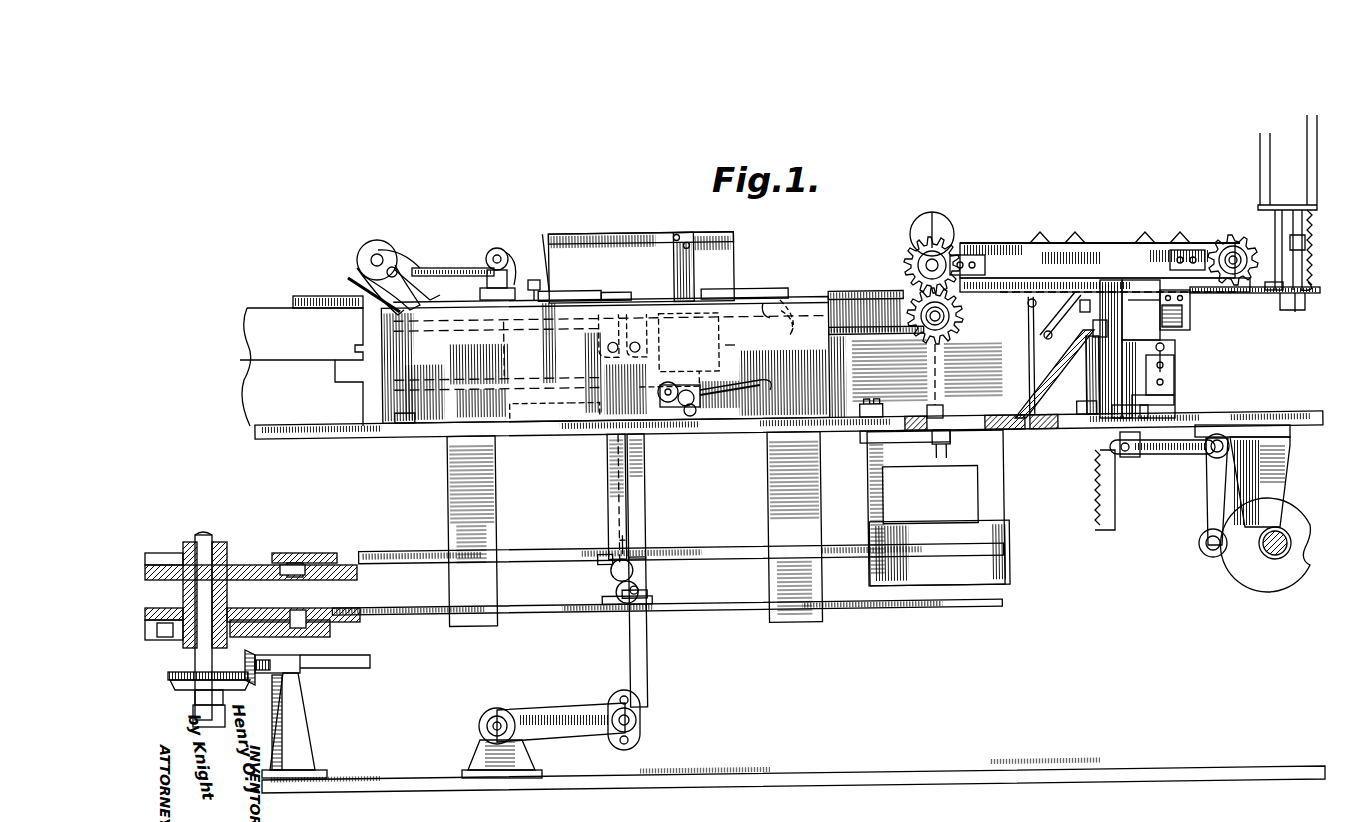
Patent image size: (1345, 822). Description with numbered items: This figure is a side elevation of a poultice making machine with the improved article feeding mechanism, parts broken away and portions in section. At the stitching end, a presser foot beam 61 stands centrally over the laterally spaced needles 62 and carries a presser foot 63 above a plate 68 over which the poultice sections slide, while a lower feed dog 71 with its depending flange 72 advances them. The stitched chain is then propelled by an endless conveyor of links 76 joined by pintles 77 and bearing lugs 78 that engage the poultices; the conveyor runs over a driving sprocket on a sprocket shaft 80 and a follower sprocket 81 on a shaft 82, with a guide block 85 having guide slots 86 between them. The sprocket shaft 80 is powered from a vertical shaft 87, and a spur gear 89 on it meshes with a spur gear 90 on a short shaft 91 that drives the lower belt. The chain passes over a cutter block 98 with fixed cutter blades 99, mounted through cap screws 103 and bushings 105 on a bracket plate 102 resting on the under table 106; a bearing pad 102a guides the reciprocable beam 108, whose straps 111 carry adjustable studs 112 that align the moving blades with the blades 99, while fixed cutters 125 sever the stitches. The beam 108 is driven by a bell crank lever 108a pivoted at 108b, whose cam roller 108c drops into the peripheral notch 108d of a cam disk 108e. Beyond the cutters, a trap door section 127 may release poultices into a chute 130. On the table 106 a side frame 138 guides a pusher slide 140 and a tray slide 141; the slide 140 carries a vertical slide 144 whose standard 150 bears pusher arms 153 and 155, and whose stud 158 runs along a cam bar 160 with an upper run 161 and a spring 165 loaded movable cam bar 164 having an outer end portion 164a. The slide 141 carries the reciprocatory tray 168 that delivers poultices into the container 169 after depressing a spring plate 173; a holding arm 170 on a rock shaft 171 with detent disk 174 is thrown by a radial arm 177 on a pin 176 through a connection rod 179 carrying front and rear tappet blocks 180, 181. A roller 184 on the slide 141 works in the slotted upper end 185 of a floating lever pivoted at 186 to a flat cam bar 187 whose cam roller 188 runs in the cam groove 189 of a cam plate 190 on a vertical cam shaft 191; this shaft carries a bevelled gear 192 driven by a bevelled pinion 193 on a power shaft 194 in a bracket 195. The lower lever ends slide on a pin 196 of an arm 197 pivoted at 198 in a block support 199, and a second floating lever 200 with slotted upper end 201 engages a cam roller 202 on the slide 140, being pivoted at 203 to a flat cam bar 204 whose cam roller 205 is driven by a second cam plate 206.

The presser foot beam 61 is at (1275, 222).
The needles 62 is at (1292, 262).
The presser foot 63 is at (1276, 294).
The plate 68 is at (1255, 293).
The lower feed dog 71 is at (1302, 298).
The depending flange 72 is at (1296, 305).
The links 76 is at (1100, 227).
The pintles 77 is at (1079, 227).
The lugs 78 is at (1145, 227).
The sprocket shaft 80 is at (912, 263).
The follower sprocket 81 is at (1236, 246).
The shaft 82 is at (534, 280).
The guide block 85 is at (1100, 260).
The guide slots 86 is at (985, 252).
The vertical shaft 87 is at (943, 397).
The spur gear 89 is at (912, 255).
The spur gear 90 is at (952, 330).
The short shaft 91 is at (933, 324).
The cutter block 98 is at (1190, 322).
The fixed cutter blades 99 is at (1186, 300).
The bracket plate 102 is at (1120, 368).
The bearing pad 102a is at (1150, 403).
The cap screws 103 is at (1095, 340).
The bushings 105 is at (1165, 363).
The supporting plate or table 106 is at (405, 432).
The reciprocable beam 108 is at (1142, 390).
The bell crank lever 108a is at (1168, 452).
The pivot 108b is at (1214, 460).
The cam roller 108c is at (1203, 550).
The peripheral notch 108d is at (1290, 582).
The cam disk 108e is at (1245, 570).
The straps or bars 111 is at (1160, 380).
The adjustable lugs or studs 112 is at (1164, 350).
The knife edges or cutters 125 is at (620, 292).
The trap door section 127 is at (1032, 303).
The chute 130 is at (1035, 392).
The guide plate or supporting frame 138 is at (765, 303).
The slide 140 is at (720, 343).
The slide 141 is at (512, 340).
The vertical slide 144 is at (674, 365).
The standard 150 is at (676, 272).
The pusher arm 153 is at (735, 288).
The pusher arm 155 is at (553, 275).
The stud 158 is at (678, 410).
The cam bar 160 is at (570, 418).
The upper run 161 is at (533, 418).
The movable cam bar 164 is at (746, 400).
The outer end portion 164a is at (760, 385).
The spring 165 is at (695, 412).
The reciprocatory tray 168 is at (455, 305).
The box or container 169 is at (302, 298).
The poultice holding arm 170 is at (405, 262).
The rock shaft 171 is at (392, 266).
The spring plate 173 is at (362, 250).
The detent disk 174 is at (350, 278).
The pin 176 is at (496, 248).
The radial arm 177 is at (510, 255).
The connection rod 179 is at (445, 268).
The front tappet block 180 is at (415, 268).
The rear tappet block 181 is at (488, 270).
The roller 184 is at (688, 342).
The slotted upper end 185 is at (638, 486).
The pivotal connection 186 is at (636, 588).
The flat cam bar 187 is at (585, 606).
The cam roller 188 is at (300, 610).
The cam groove 189 is at (162, 637).
The cam plate 190 is at (262, 617).
The vertical cam shaft 191 is at (212, 540).
The bevelled gear 192 is at (180, 690).
The bevelled pinion 193 is at (250, 690).
The power shaft 194 is at (368, 655).
The bracket 195 is at (300, 714).
The pin 196 is at (638, 712).
The arm 197 is at (568, 712).
The pivot 198 is at (498, 715).
The block support 199 is at (522, 758).
The floating lever 200 is at (612, 503).
The slotted upper end 201 is at (610, 350).
The cam roller 202 is at (612, 338).
The pivotal connection 203 is at (612, 558).
The flat cam bar 204 is at (528, 544).
The cam roller 205 is at (312, 553).
The cam plate 206 is at (352, 578).